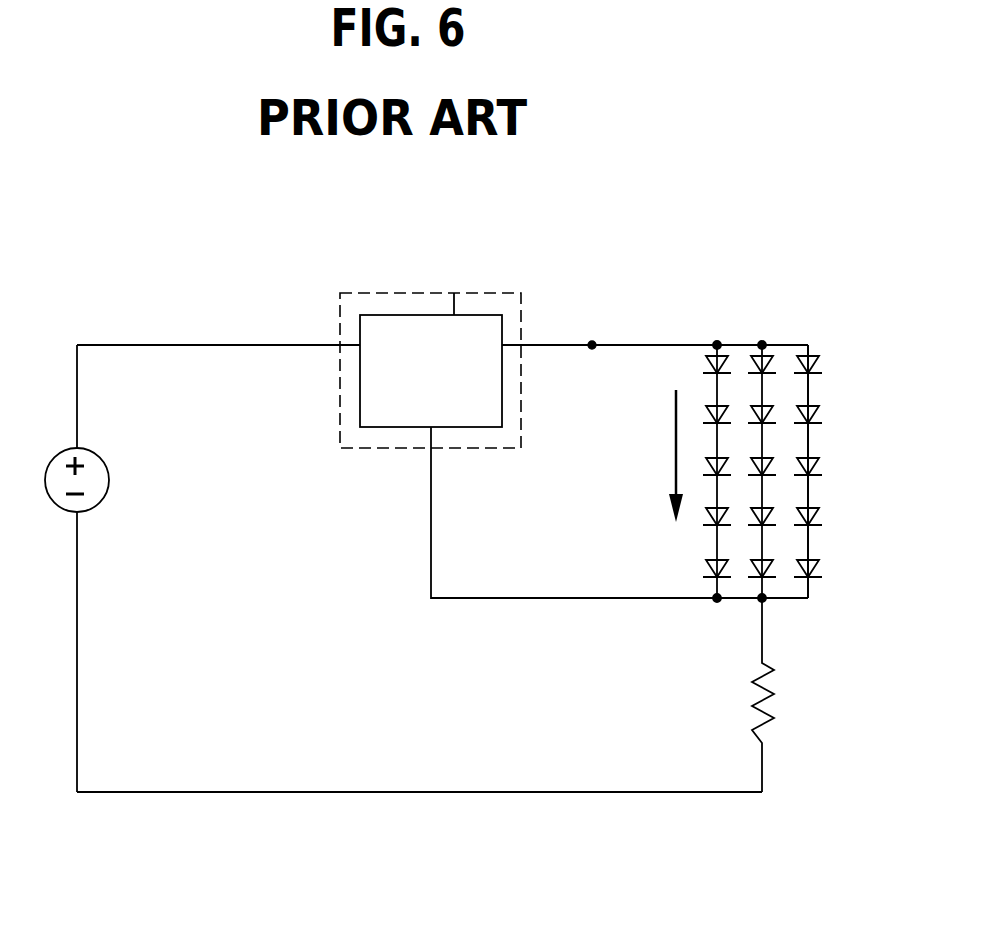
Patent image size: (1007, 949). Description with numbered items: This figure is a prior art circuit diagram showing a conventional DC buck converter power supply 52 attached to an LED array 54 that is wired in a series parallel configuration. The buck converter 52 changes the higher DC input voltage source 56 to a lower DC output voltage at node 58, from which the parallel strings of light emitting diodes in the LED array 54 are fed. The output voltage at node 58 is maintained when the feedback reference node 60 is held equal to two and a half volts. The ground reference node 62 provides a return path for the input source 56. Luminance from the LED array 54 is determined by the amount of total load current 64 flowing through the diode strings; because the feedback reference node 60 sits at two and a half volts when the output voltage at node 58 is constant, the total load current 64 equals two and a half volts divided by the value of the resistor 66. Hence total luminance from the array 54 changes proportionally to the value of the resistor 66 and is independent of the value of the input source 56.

The buck converter power supply 52 is at (454, 293).
The LED array 54 is at (832, 503).
The DC input voltage source 56 is at (98, 503).
The output voltage node 58 is at (592, 341).
The feedback reference node 60 is at (550, 598).
The ground reference node 62 is at (593, 792).
The total load current 64 is at (673, 460).
The resistor 66 is at (770, 708).